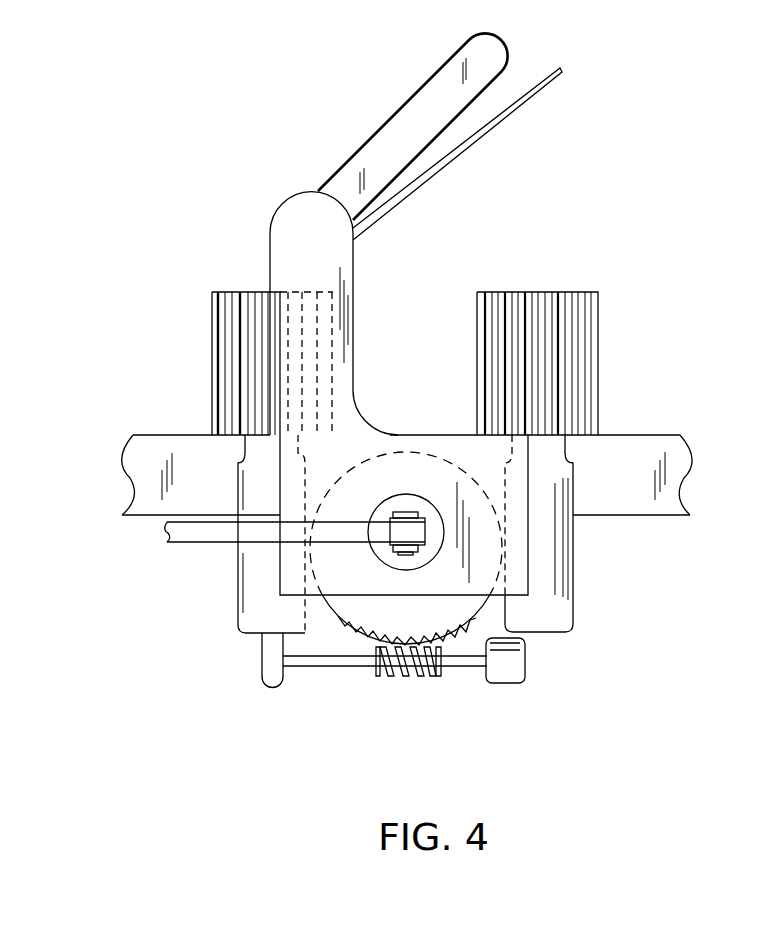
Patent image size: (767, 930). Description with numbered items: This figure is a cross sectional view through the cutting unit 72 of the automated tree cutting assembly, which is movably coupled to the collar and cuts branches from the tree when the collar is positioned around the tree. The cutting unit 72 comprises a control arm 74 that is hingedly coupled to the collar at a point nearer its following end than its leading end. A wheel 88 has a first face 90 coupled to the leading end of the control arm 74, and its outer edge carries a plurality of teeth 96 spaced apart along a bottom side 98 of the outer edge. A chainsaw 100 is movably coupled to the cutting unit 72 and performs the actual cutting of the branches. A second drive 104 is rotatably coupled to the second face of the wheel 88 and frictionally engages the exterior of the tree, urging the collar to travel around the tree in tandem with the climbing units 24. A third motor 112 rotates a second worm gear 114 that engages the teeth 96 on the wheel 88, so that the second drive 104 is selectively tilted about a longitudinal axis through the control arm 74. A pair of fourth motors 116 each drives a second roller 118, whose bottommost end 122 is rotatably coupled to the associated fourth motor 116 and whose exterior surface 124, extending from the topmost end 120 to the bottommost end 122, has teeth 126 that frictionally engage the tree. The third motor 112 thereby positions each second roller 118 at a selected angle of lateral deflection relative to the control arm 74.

The cutting unit 72 is at (294, 140).
The chainsaw 100 is at (392, 128).
The second drive 104 is at (548, 275).
The teeth 126 is at (558, 323).
The second rollers 118 is at (214, 292).
The exterior surface 124 is at (237, 352).
The topmost end 120 is at (245, 292).
The bottommost end 122 is at (230, 437).
The control arm 74 is at (213, 541).
The fourth motors 116 is at (245, 636).
The climbing units 24 is at (477, 607).
The bottom side 98 is at (460, 667).
The second worm gear 114 is at (410, 678).
The first face 90 is at (437, 617).
The wheel 88 is at (330, 600).
The teeth 96 is at (347, 607).
The third motor 112 is at (527, 640).